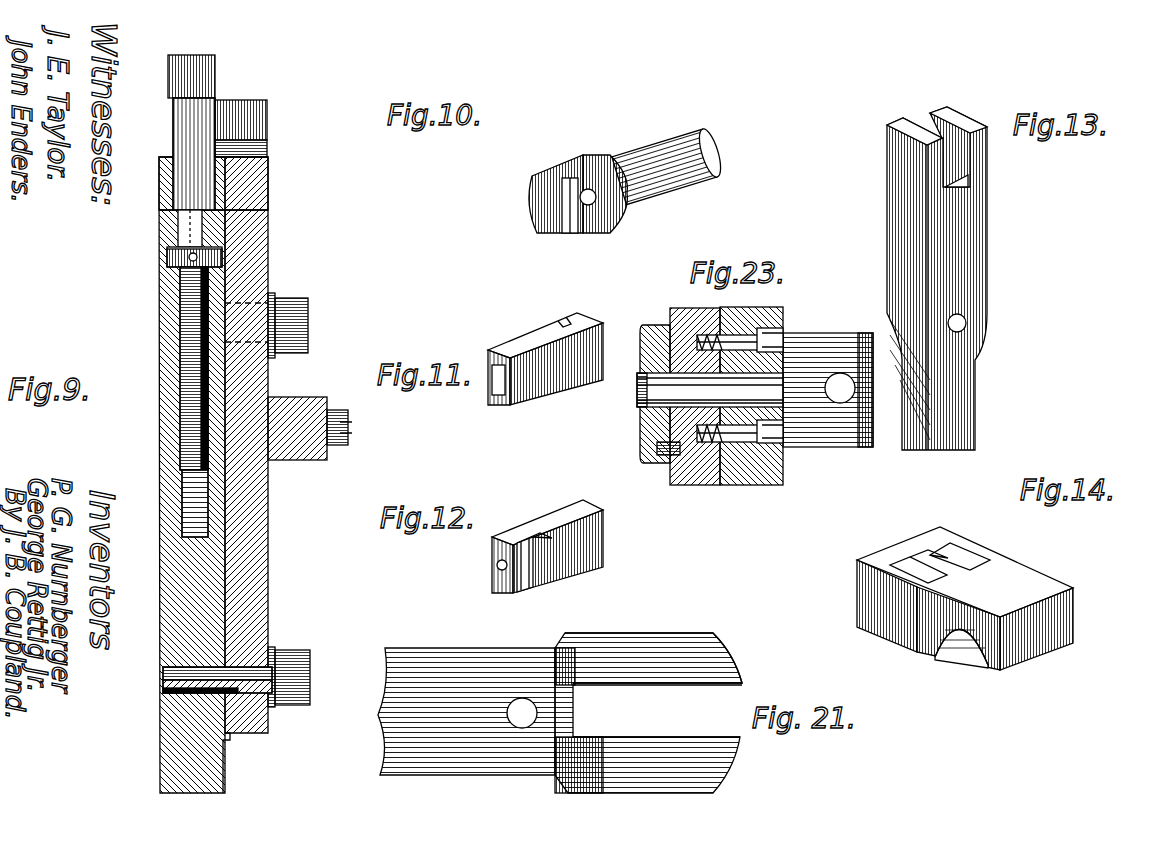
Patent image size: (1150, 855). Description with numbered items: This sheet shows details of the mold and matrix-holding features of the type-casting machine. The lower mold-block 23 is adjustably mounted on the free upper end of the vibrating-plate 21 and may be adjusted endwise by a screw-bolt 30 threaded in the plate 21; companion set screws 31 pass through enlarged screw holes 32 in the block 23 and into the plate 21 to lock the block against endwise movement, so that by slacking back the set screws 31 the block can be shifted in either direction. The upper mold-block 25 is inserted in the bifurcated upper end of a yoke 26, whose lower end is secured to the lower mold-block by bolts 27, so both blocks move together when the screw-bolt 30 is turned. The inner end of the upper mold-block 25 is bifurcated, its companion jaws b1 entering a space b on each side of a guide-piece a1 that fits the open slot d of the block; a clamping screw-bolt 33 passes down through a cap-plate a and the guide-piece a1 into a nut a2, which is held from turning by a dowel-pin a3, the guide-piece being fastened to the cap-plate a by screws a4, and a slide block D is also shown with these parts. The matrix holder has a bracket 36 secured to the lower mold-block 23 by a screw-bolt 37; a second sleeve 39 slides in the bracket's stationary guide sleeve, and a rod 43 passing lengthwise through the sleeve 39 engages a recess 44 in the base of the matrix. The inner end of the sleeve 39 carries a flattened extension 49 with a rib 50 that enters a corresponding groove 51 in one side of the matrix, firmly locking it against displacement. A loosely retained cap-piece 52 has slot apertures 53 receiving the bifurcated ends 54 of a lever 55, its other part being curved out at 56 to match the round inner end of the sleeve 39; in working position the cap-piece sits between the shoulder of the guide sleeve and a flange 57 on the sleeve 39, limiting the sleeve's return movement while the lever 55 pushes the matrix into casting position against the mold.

In FIG. 9, the vibrating-plate 21 is at (205, 475).
In FIG. 9, the lower mold-block 23 is at (258, 593).
In FIG. 9, the yoke 26 is at (270, 183).
In FIG. 9, the bolts 27 is at (253, 97).
In FIG. 9, the screw-bolt 30 is at (180, 148).
In FIG. 9, the set screws 31 is at (310, 323).
In FIG. 9, the screw holes 32 is at (250, 695).
In FIG. 9, the bracket 36 is at (300, 443).
In FIG. 9, the screw-bolt 37 is at (347, 415).
In FIG. 10, the second sleeve 39 is at (670, 150).
In FIG. 10, the rod 43 is at (588, 210).
In FIG. 10, the flattened extension 49 is at (532, 207).
In FIG. 10, the rib 50 is at (560, 220).
In FIG. 10, the flange 57 is at (627, 215).
In FIG. 11, the slide block D is at (513, 343).
In FIG. 12, the slide block D is at (545, 523).
In FIG. 11, the groove 51 is at (565, 322).
In FIG. 12, the groove 51 is at (537, 570).
In FIG. 12, the recess 44 is at (497, 573).
In FIG. 23, the cap-plate a is at (773, 477).
In FIG. 23, the guide-piece a1 is at (693, 487).
In FIG. 23, the nut a2 is at (643, 325).
In FIG. 23, the dowel-pin a3 is at (663, 458).
In FIG. 23, the screws a4 is at (783, 330).
In FIG. 23, the clamping screw-bolt 33 is at (755, 390).
In FIG. 13, the bifurcated ends 54 is at (938, 110).
In FIG. 13, the lever 55 is at (975, 257).
In FIG. 14, the cap-piece 52 is at (965, 598).
In FIG. 14, the slot apertures 53 is at (962, 555).
In FIG. 14, the curved out part 56 is at (990, 657).
In FIG. 21, the upper mold-block 25 is at (466, 711).
In FIG. 21, the space b is at (648, 713).
In FIG. 21, the companion jaws b1 is at (653, 658).
In FIG. 21, the open slot d is at (657, 711).